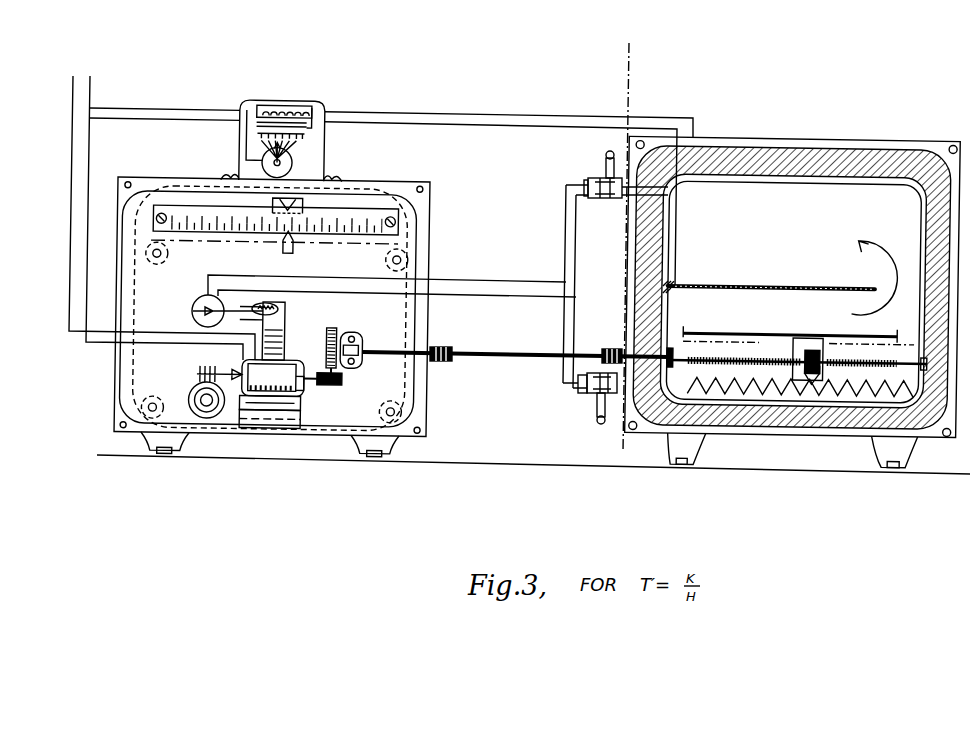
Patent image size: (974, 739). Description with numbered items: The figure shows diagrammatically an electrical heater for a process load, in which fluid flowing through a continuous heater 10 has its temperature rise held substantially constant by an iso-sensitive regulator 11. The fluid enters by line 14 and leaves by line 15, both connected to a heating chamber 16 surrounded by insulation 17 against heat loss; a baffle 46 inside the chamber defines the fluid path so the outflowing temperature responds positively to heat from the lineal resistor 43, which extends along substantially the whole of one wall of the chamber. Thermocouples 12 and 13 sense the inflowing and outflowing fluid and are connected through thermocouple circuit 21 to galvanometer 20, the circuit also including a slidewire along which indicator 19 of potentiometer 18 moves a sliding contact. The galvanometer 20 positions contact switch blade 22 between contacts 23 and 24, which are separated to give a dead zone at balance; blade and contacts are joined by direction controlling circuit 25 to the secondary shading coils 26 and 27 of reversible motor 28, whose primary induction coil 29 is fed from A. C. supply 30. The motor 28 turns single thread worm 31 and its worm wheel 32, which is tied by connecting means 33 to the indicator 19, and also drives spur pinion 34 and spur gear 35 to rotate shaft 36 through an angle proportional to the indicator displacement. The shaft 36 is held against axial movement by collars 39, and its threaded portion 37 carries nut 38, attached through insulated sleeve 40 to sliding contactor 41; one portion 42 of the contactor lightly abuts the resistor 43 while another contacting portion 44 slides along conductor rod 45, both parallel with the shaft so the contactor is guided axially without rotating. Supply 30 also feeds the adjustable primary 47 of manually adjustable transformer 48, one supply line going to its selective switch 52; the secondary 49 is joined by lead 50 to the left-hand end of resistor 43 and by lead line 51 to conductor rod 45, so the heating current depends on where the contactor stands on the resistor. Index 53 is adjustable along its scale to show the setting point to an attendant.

The continuous heater 10 is at (831, 132).
The regulator 11 is at (629, 43).
The thermocouple 12 is at (590, 398).
The thermocouple 13 is at (600, 175).
The line 14 is at (600, 419).
The line 15 is at (607, 153).
The heating chamber 16 is at (737, 198).
The insulation 17 is at (873, 162).
The potentiometer 18 is at (190, 183).
The indicator 19 is at (282, 249).
The galvanometer 20 is at (197, 304).
The thermocouple circuit 21 is at (458, 292).
The contact switch blade 22 is at (277, 312).
The contact 23 is at (244, 307).
The contact 24 is at (285, 325).
The direction controlling circuit 25 is at (277, 348).
The secondary shading coil 26 is at (300, 380).
The secondary shading coil 27 is at (246, 362).
The reversible motor 28 is at (298, 403).
The primary induction coil 29 is at (298, 414).
The A. C. supply 30 is at (94, 76).
The single thread worm 31 is at (204, 367).
The worm wheel 32 is at (197, 385).
The connecting means 33 is at (133, 367).
The spur pinion 34 is at (335, 380).
The spur gear 35 is at (336, 333).
The shaft 36 is at (498, 347).
The threaded portion 37 is at (737, 363).
The nut 38 is at (823, 353).
The collars 39 is at (444, 346).
The insulated sleeve 40 is at (821, 370).
The sliding contactor 41 is at (803, 338).
The portion 42 is at (813, 373).
The lineal resistor 43 is at (763, 392).
The contacting portion 44 is at (813, 336).
The conductor rod 45 is at (748, 333).
The baffle 46 is at (758, 293).
The adjustable primary 47 is at (306, 140).
The manually adjustable transformer 48 is at (276, 100).
The secondary 49 is at (294, 107).
The lead 50 is at (452, 130).
The lead line 51 is at (452, 101).
The selective switch 52 is at (289, 161).
The index 53 is at (302, 207).